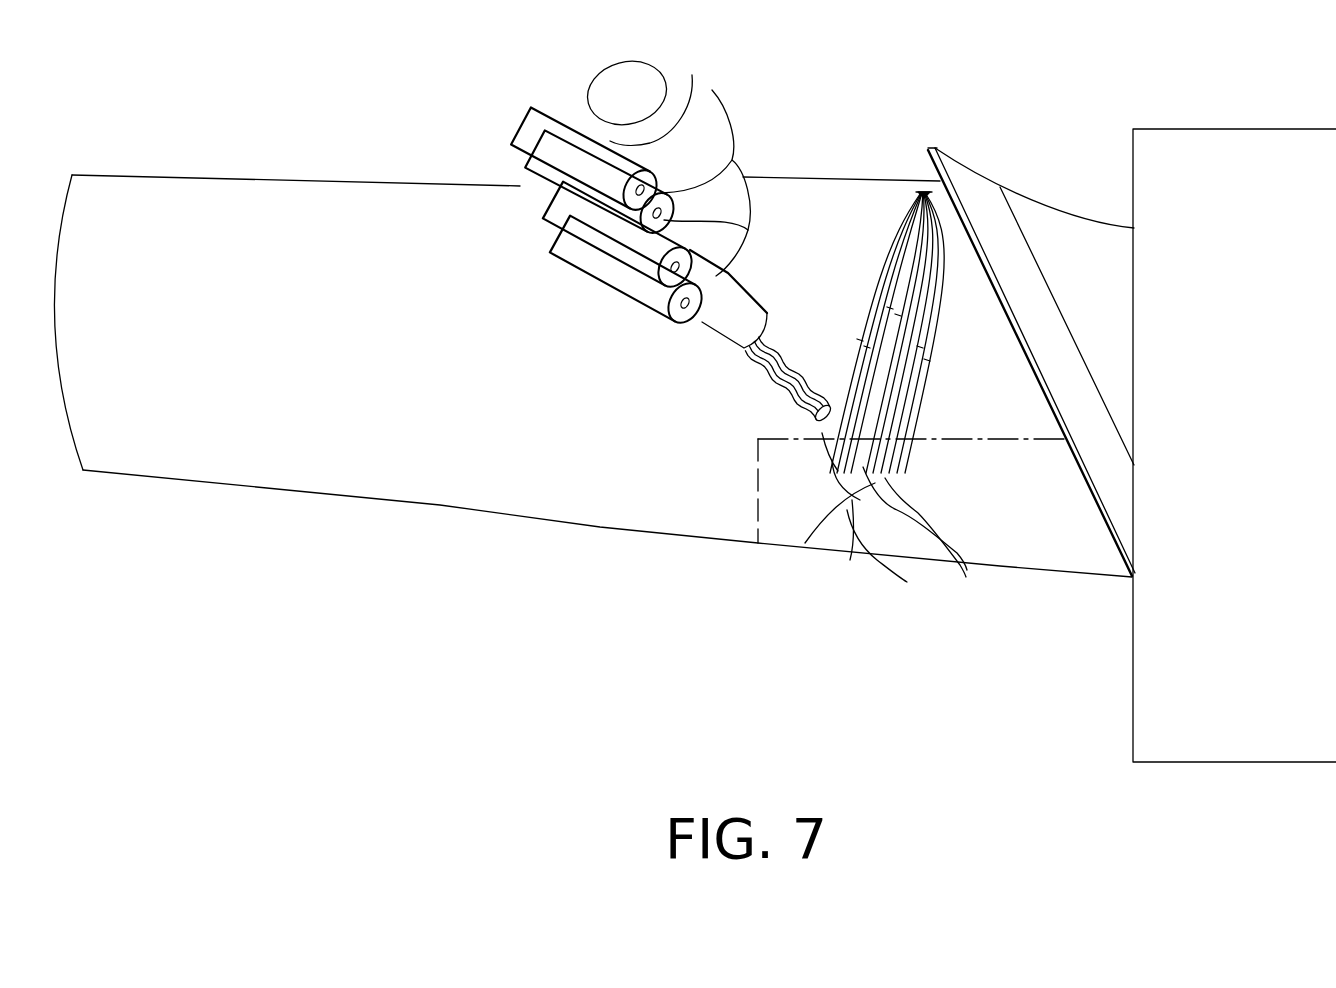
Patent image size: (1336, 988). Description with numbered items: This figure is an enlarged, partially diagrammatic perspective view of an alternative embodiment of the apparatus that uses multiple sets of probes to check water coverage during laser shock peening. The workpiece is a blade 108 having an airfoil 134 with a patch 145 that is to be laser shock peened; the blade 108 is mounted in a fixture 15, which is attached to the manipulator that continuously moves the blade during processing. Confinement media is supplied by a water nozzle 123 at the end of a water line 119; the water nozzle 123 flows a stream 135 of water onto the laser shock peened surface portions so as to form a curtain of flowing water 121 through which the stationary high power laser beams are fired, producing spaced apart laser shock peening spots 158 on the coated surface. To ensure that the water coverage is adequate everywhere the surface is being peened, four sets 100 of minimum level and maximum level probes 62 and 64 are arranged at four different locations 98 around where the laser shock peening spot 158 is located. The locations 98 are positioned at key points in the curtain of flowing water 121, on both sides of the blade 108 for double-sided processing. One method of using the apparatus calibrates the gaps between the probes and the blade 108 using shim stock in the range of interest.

The fixture 15 is at (1192, 762).
The minimum level probe 62 is at (915, 409).
The maximum level probe 64 is at (934, 366).
The location 98 is at (833, 440).
The set of minimum level and maximum level probes 100 is at (946, 381).
The blade 108 is at (874, 76).
The water line 119 is at (692, 75).
The curtain of flowing water 121 is at (934, 521).
The water nozzle 123 is at (768, 330).
The airfoil 134 is at (430, 347).
The stream of water 135 is at (782, 362).
The patch 145 is at (758, 490).
The laser shock peening spot 158 is at (805, 543).